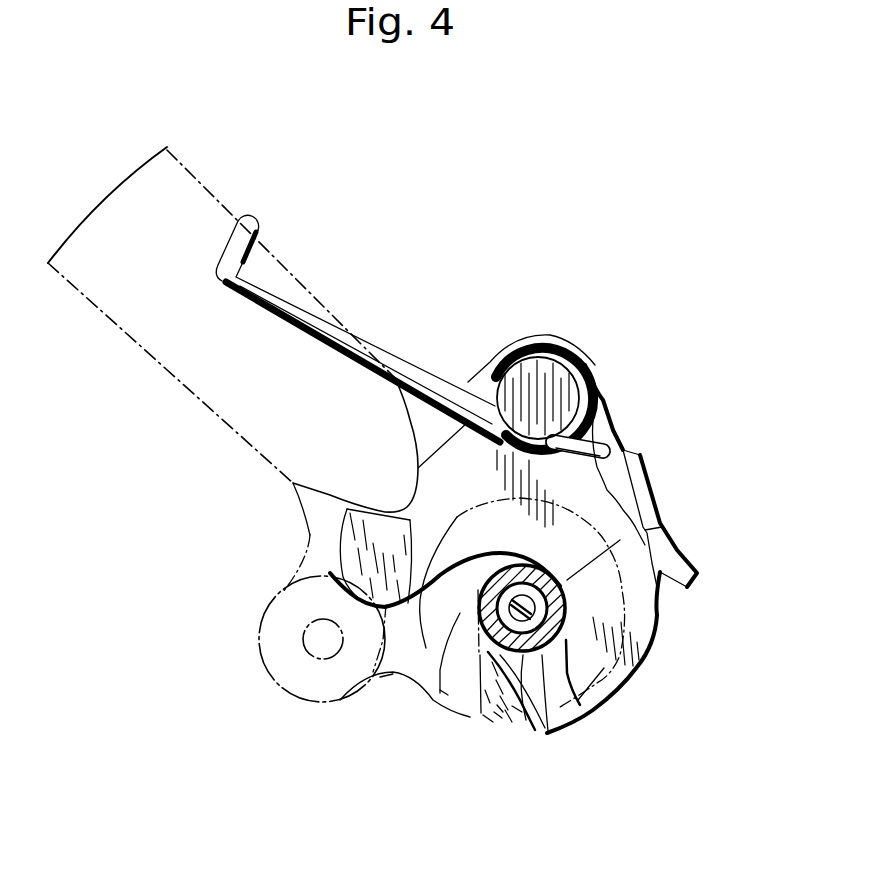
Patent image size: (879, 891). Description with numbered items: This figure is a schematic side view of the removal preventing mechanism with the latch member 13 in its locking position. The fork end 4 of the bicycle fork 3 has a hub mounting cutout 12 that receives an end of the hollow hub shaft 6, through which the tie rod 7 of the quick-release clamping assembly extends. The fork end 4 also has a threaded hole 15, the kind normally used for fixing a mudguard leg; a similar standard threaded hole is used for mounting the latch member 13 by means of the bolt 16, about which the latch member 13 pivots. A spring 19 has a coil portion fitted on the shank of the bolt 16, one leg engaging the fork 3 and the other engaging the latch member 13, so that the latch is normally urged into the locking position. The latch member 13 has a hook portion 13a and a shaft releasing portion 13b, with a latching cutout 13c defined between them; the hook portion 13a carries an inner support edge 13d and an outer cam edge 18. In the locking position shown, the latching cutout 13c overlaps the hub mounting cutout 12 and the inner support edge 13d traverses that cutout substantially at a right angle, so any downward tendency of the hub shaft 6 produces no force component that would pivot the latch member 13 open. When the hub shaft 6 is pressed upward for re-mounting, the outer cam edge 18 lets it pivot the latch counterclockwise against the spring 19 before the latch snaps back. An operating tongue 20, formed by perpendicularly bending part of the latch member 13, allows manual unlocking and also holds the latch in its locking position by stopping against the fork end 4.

The fork 3 is at (208, 196).
The fork end 4 is at (417, 687).
The hub shaft 6 is at (523, 720).
The tie rod 7 is at (545, 603).
The hub mounting cutout 12 is at (490, 722).
The latch member 13 is at (657, 627).
The hook portion 13a is at (517, 710).
The shaft releasing portion 13b is at (393, 680).
The latching cutout 13c is at (440, 683).
The inner support edge 13d is at (500, 710).
The threaded hole 15 is at (305, 653).
The bolt 16 is at (550, 388).
The outer cam edge 18 is at (497, 717).
The spring 19 is at (413, 377).
The operating tongue 20 is at (643, 493).